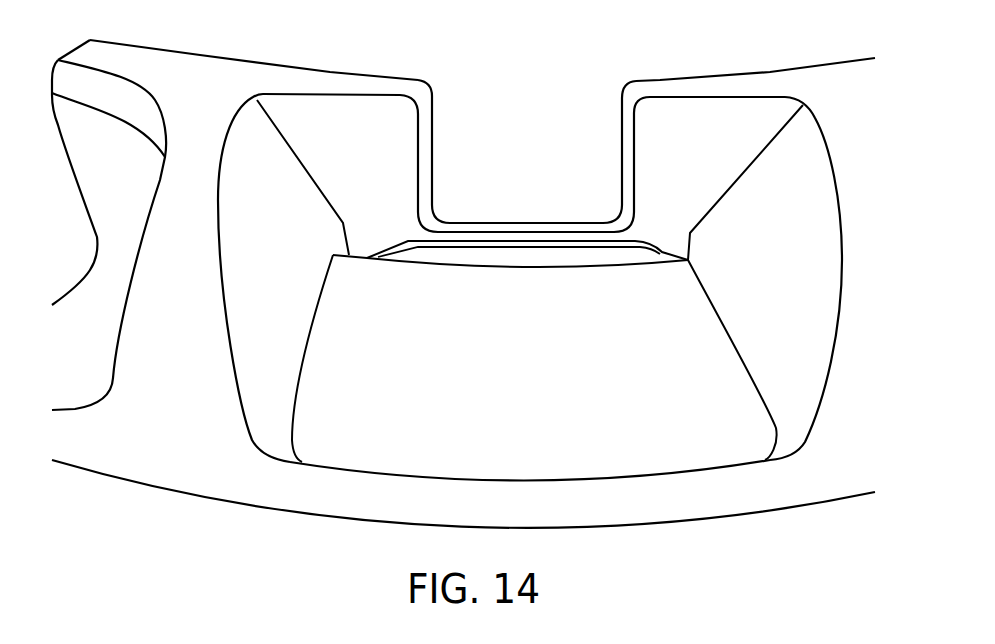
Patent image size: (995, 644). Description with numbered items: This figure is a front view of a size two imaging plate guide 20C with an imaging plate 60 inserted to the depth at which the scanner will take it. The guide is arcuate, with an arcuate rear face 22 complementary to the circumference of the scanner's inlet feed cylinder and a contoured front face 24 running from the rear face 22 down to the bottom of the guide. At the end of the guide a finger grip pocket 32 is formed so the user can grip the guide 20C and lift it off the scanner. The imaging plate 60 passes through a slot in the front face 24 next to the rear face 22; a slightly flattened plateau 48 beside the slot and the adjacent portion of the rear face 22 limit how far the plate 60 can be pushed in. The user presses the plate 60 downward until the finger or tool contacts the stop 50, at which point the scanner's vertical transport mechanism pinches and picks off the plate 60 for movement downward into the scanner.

The size 2 imaging plate guide 20C is at (714, 543).
The arcuate rear face 22 is at (240, 60).
The front face 24 is at (178, 442).
The finger grip pocket 32 is at (91, 362).
The plateau 48 is at (536, 373).
The stop 50 is at (498, 228).
The imaging plate 60 is at (578, 258).